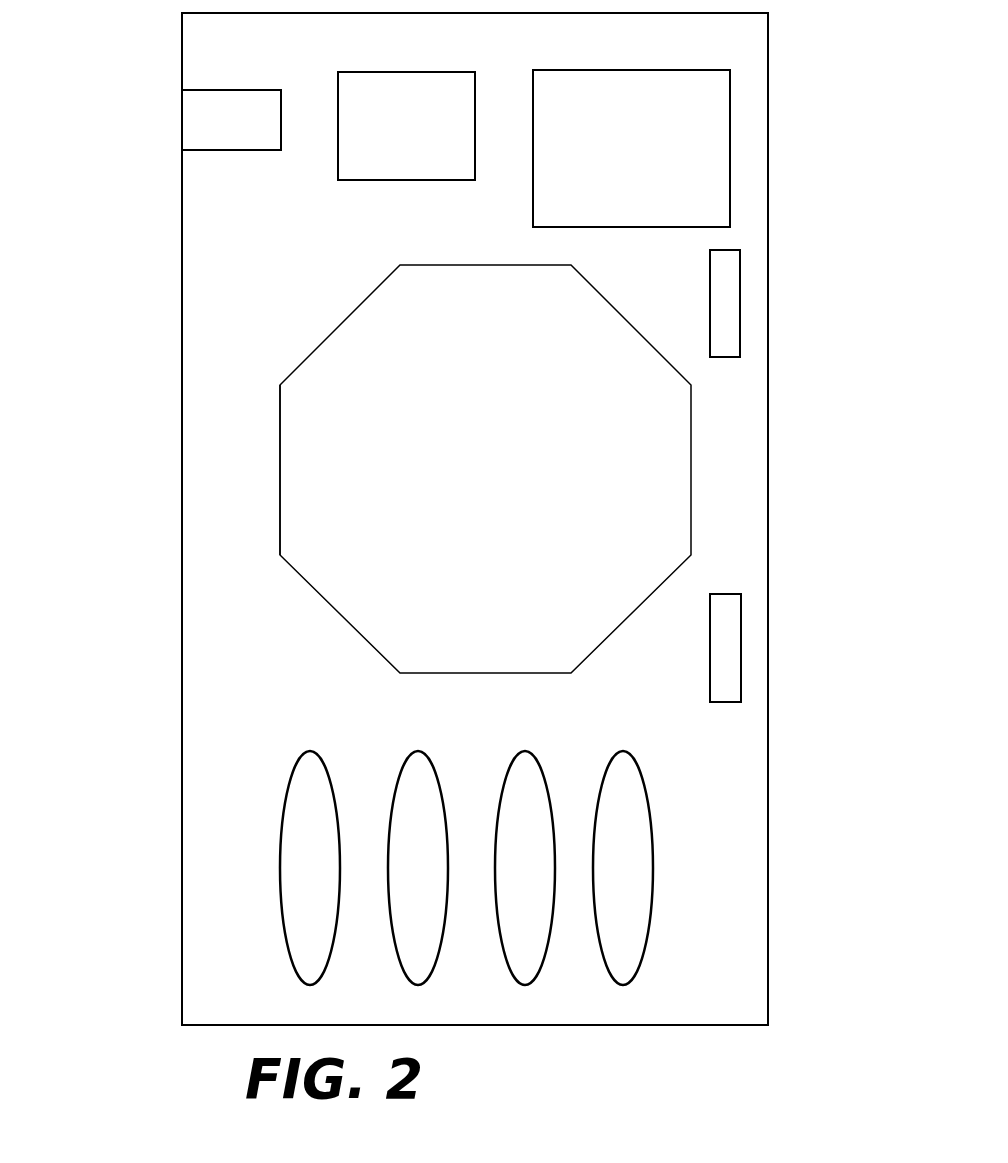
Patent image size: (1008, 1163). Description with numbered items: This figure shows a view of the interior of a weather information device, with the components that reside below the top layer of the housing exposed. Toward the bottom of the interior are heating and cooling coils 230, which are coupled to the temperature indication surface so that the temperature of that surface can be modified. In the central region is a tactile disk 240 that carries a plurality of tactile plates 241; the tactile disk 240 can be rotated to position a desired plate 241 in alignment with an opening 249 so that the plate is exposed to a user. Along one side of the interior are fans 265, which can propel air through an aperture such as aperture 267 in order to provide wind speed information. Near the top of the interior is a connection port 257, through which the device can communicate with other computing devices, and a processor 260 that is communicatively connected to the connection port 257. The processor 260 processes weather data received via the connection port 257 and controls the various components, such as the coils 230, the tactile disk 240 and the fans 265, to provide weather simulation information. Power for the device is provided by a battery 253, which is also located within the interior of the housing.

The heating and cooling coils 230 is at (262, 907).
The tactile disk 240 is at (507, 472).
The tactile plates 241 is at (262, 498).
The opening 249 is at (163, 480).
The battery 253 is at (653, 156).
The connection port 257 is at (163, 110).
The processor 260 is at (418, 139).
The fans 265 is at (748, 277).
The aperture 267 is at (768, 330).